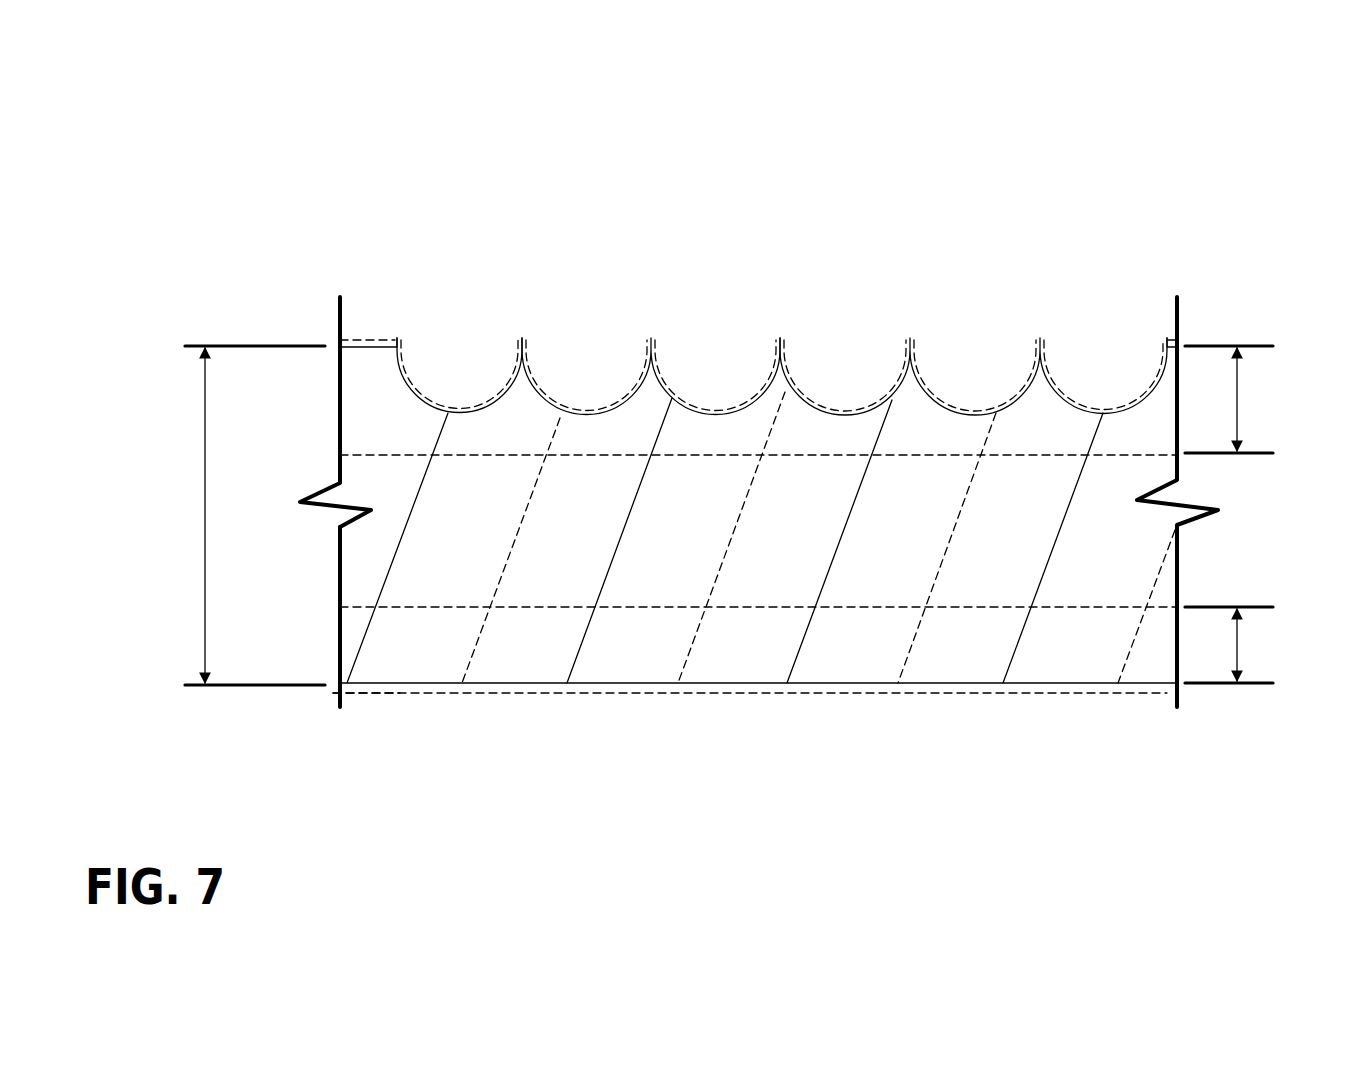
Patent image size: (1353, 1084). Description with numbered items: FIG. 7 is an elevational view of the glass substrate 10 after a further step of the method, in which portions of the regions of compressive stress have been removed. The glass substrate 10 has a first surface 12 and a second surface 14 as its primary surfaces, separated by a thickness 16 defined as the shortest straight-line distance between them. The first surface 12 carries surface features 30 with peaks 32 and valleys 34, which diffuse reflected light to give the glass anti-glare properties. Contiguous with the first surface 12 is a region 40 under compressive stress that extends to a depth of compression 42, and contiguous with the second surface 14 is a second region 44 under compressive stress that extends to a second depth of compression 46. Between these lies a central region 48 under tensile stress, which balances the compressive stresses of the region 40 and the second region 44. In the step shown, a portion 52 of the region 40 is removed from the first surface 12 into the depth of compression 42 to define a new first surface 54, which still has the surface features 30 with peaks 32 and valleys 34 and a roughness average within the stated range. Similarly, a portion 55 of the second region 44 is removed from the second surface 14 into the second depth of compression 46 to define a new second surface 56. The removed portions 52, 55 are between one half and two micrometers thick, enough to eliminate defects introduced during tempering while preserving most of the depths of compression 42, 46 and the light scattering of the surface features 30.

The glass substrate 10 is at (385, 179).
The first surface 12 is at (358, 337).
The second surface 14 is at (388, 693).
The thickness 16 is at (205, 512).
The surface features 30 is at (483, 404).
The peaks 32 is at (780, 338).
The valleys 34 is at (977, 412).
The region of compressive stress 40 is at (365, 397).
The depth of compression 42 is at (1237, 383).
The second region 44 is at (353, 643).
The second depth of compression 46 is at (1237, 650).
The central region 48 is at (1115, 558).
The portion 52 is at (367, 350).
The new first surface 54 is at (387, 338).
The portion 55 is at (417, 693).
The new second surface 56 is at (615, 685).